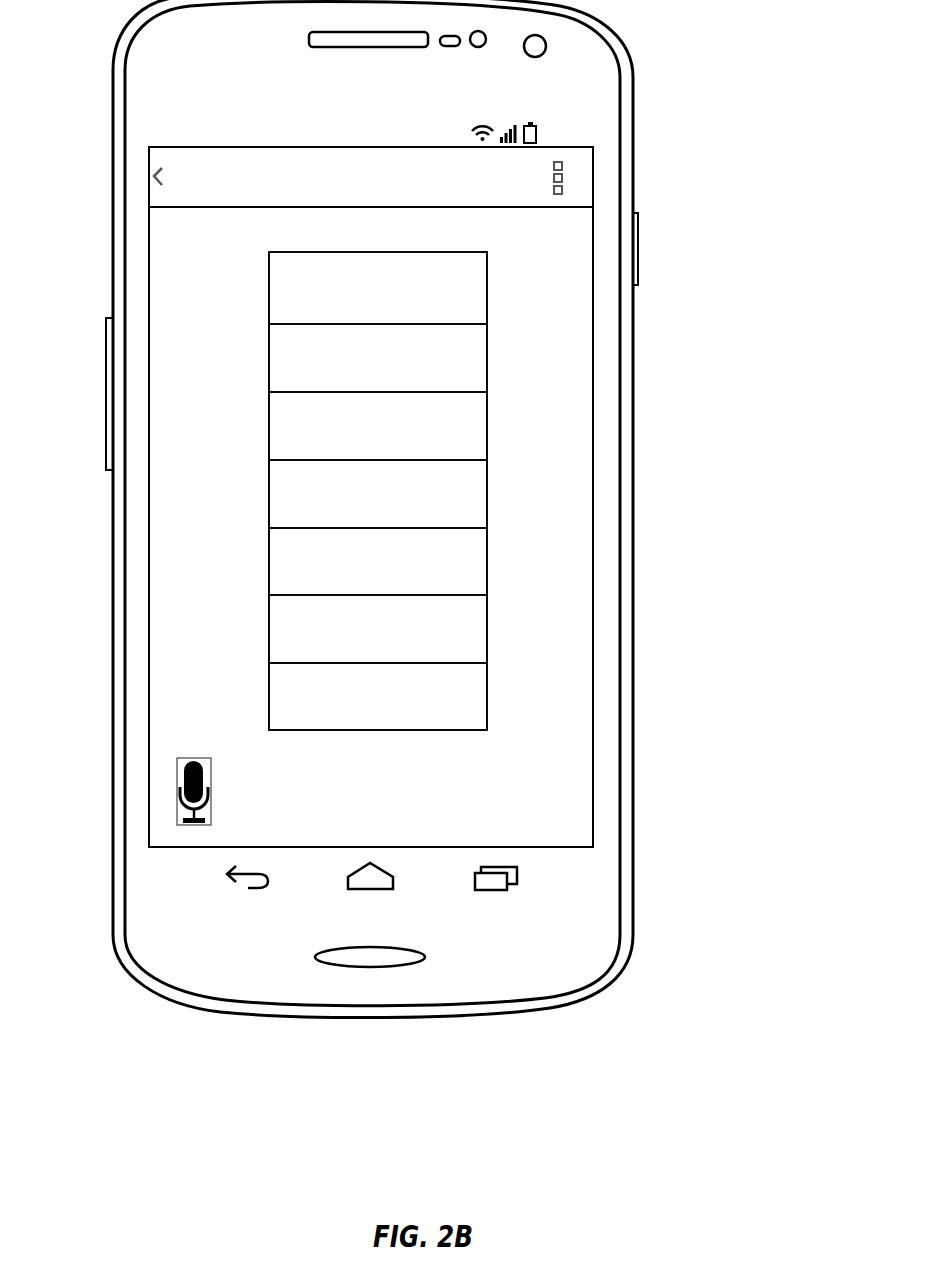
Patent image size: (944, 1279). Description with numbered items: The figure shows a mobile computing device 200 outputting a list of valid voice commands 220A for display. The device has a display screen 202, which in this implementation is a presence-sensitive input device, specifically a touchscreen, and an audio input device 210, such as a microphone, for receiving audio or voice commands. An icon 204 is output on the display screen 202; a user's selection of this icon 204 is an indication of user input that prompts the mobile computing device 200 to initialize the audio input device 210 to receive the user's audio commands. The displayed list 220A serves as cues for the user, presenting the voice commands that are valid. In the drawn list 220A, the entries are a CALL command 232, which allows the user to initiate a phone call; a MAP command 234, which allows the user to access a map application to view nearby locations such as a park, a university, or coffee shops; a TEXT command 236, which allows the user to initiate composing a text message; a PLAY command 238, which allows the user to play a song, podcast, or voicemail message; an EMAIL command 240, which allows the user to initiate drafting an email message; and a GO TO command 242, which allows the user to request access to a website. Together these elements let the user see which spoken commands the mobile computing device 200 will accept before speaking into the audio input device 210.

The mobile computing device 200 is at (633, 50).
The display screen 202 is at (593, 320).
The icon 204 is at (177, 783).
The audio input device 210 is at (410, 963).
The list of valid voice commands 220A is at (246, 312).
The CALL command 232 is at (487, 355).
The MAP command 234 is at (487, 424).
The TEXT command 236 is at (487, 490).
The PLAY command 238 is at (487, 564).
The EMAIL command 240 is at (487, 634).
The GO TO command 242 is at (487, 700).